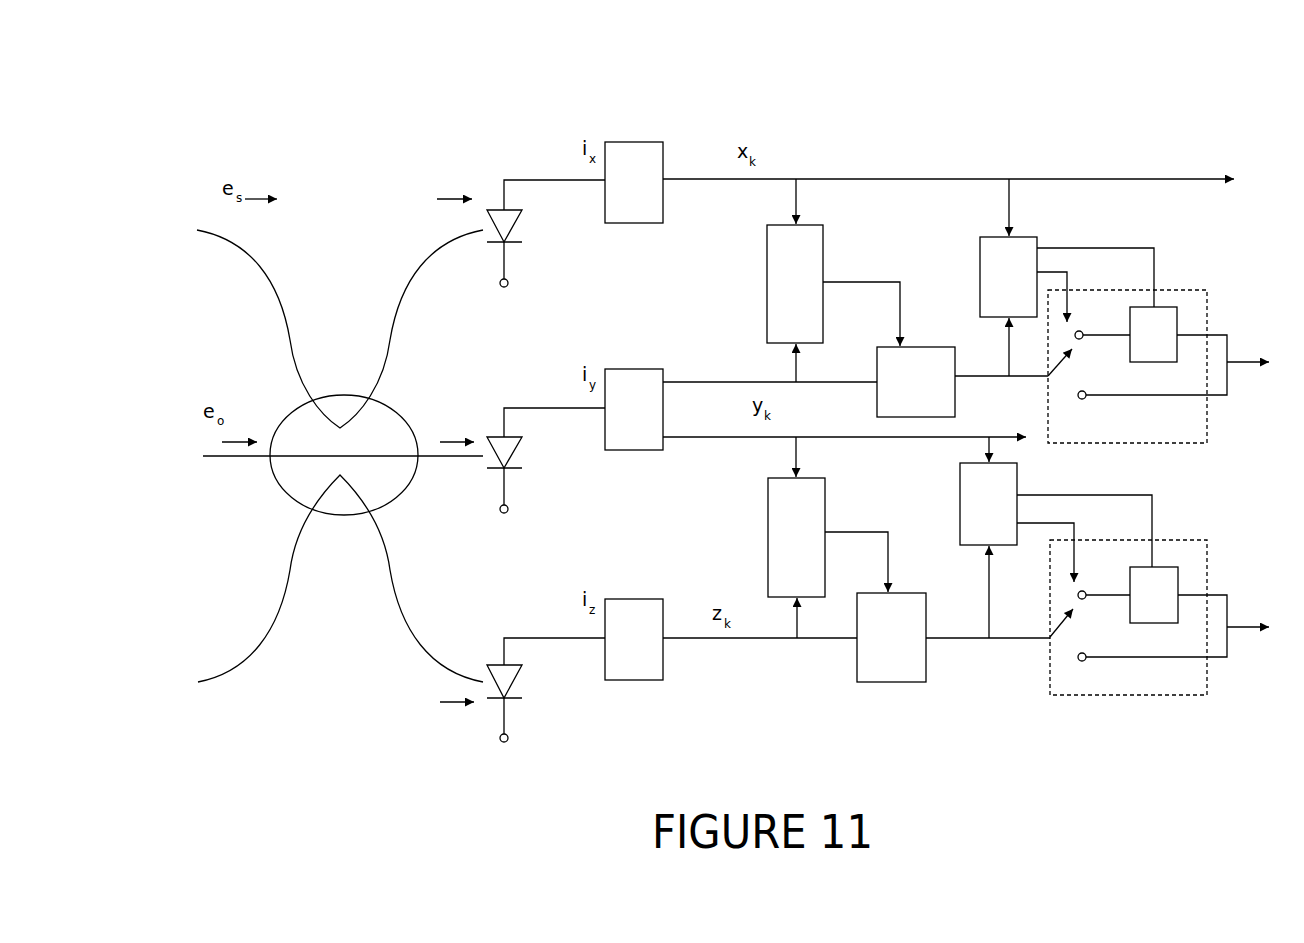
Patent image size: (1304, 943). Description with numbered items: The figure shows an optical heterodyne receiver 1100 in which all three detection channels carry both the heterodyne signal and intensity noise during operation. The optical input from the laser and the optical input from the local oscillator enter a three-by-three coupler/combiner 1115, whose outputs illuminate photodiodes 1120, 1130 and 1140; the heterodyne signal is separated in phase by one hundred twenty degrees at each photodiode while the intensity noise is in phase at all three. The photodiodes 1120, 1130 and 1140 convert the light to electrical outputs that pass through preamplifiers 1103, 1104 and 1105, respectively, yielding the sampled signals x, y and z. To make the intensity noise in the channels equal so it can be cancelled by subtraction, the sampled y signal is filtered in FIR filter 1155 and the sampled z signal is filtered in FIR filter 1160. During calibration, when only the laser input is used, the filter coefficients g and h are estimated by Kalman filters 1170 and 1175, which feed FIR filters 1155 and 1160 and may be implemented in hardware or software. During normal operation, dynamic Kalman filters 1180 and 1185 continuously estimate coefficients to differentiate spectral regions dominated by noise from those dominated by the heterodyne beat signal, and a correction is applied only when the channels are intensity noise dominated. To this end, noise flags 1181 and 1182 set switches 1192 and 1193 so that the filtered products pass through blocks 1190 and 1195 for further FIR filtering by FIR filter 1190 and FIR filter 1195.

The optical heterodyne receiver 1100 is at (511, 119).
The 3×3 coupler/combiner 1115 is at (342, 412).
The photodiode 1120 is at (520, 216).
The photodiode 1130 is at (520, 445).
The photodiode 1140 is at (520, 673).
The preamplifier 1103 is at (653, 212).
The preamplifier 1104 is at (657, 443).
The preamplifier 1105 is at (657, 660).
The Kalman filter 1170 is at (817, 243).
The Kalman filter 1175 is at (815, 495).
The FIR filter 1155 is at (885, 405).
The FIR filter 1160 is at (918, 672).
The dynamic Kalman filter 1180 is at (1017, 245).
The dynamic Kalman filter 1185 is at (968, 490).
The noise flag 1181 is at (1067, 278).
The noise flag 1182 is at (1073, 554).
The FIR filter 1190 is at (1160, 363).
The FIR filter 1195 is at (1159, 617).
The switch 1192 is at (1071, 376).
The switch 1193 is at (1085, 600).